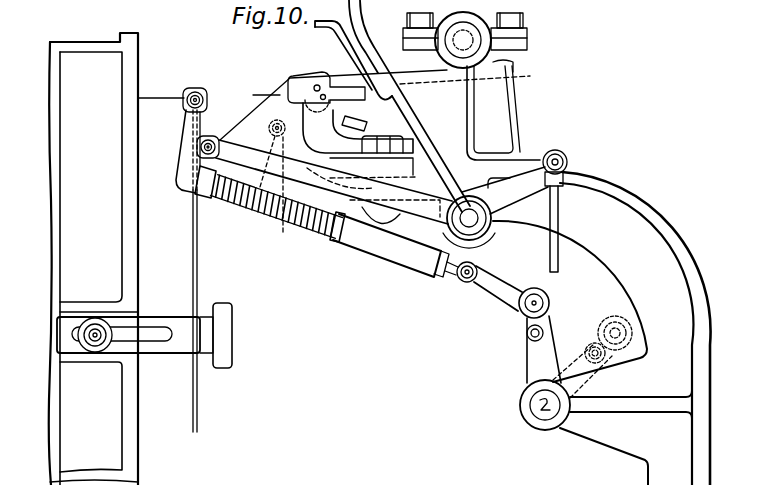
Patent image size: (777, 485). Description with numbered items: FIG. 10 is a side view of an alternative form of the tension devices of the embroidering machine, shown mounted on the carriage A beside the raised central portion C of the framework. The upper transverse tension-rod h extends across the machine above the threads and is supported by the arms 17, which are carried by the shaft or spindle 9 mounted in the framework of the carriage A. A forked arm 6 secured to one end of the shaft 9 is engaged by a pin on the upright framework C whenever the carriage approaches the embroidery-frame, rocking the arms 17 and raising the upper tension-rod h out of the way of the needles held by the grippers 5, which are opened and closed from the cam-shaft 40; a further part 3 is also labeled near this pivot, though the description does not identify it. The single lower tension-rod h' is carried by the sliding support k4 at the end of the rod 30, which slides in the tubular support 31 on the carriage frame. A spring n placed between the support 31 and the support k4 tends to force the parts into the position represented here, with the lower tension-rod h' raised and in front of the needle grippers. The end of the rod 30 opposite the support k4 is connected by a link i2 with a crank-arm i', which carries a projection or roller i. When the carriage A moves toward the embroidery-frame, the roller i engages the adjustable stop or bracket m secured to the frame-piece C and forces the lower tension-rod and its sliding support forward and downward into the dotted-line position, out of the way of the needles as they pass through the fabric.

The raised central portion of the framework C is at (93, 259).
The adjustable stop or bracket m is at (233, 340).
The lower tension-rod h' is at (204, 90).
The upper transverse tension-rod h is at (213, 135).
The sliding support k4 is at (187, 187).
The spring n is at (248, 203).
The rod 30 is at (277, 219).
The tubular support 31 is at (395, 245).
The arm 17 is at (334, 182).
The needle holders or grippers 5 is at (318, 80).
The forked arm 6 is at (425, 141).
The cam-shaft 40 is at (493, 60).
The shaft or spindle 9 is at (475, 224).
The rod 3 is at (558, 217).
The carriage A is at (602, 328).
The link i2 is at (500, 295).
The projection or roller i is at (543, 314).
The crank-arm i' is at (526, 349).